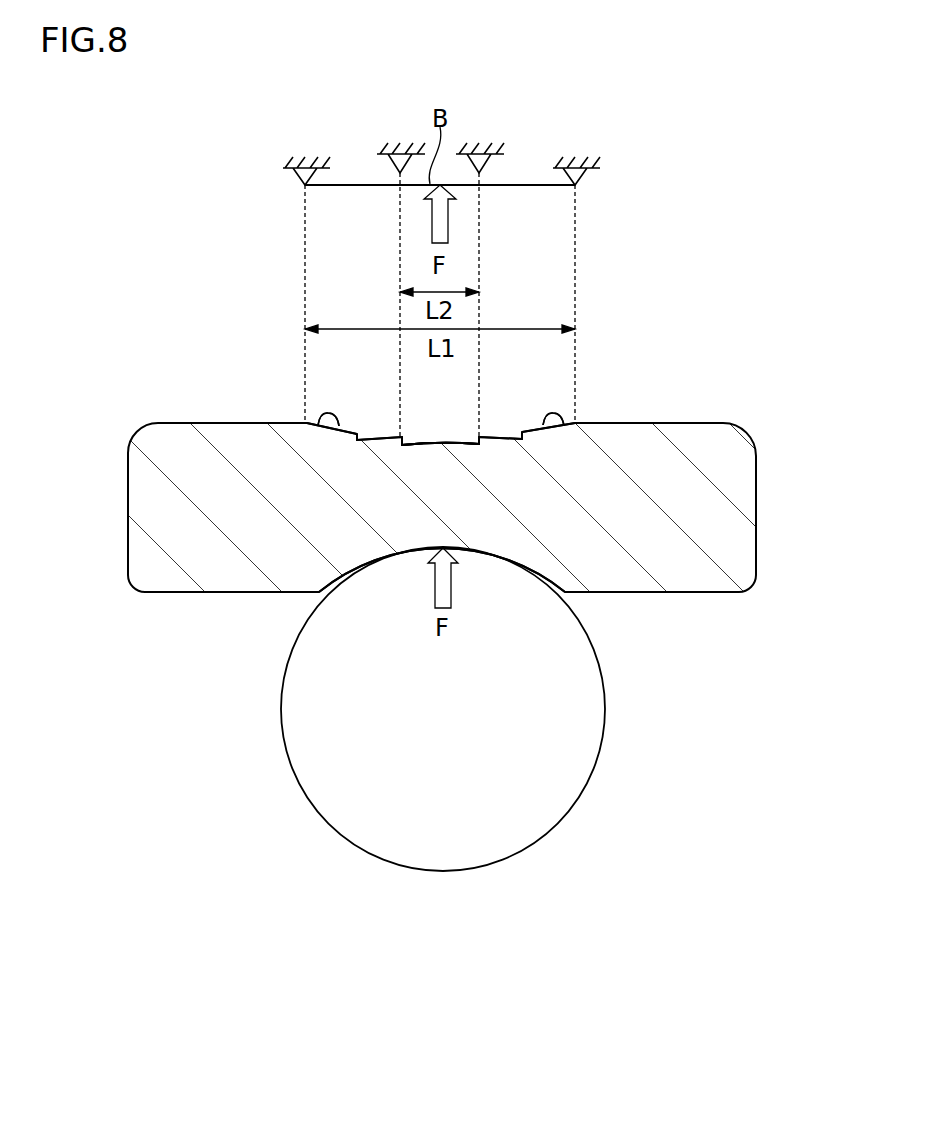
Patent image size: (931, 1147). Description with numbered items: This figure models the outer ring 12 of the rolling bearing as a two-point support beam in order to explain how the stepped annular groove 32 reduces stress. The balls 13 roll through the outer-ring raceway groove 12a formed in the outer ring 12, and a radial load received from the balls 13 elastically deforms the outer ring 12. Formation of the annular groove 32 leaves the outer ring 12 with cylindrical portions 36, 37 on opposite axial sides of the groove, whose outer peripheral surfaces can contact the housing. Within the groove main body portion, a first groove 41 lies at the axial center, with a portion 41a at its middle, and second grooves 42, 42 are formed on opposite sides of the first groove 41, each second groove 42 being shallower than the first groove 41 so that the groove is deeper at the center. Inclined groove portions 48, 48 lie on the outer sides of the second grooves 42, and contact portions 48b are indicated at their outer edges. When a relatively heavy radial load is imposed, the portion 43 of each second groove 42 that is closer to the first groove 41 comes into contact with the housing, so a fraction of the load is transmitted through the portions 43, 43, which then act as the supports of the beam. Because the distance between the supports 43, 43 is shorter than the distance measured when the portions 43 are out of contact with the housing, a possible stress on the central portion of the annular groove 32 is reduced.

The outer ring 12 is at (740, 497).
The outer-ring raceway groove 12a is at (385, 563).
The balls 13 is at (533, 847).
The annular groove 32 is at (463, 418).
The cylindrical portion 36 is at (243, 437).
The cylindrical portion 37 is at (638, 435).
The first groove 41 is at (418, 443).
The bottom surface center portion 41a is at (441, 442).
The second grooves 42 is at (365, 437).
The portion of second groove 43 is at (398, 142).
The inclined groove portions 48 is at (320, 424).
The contact portion 48b is at (303, 170).